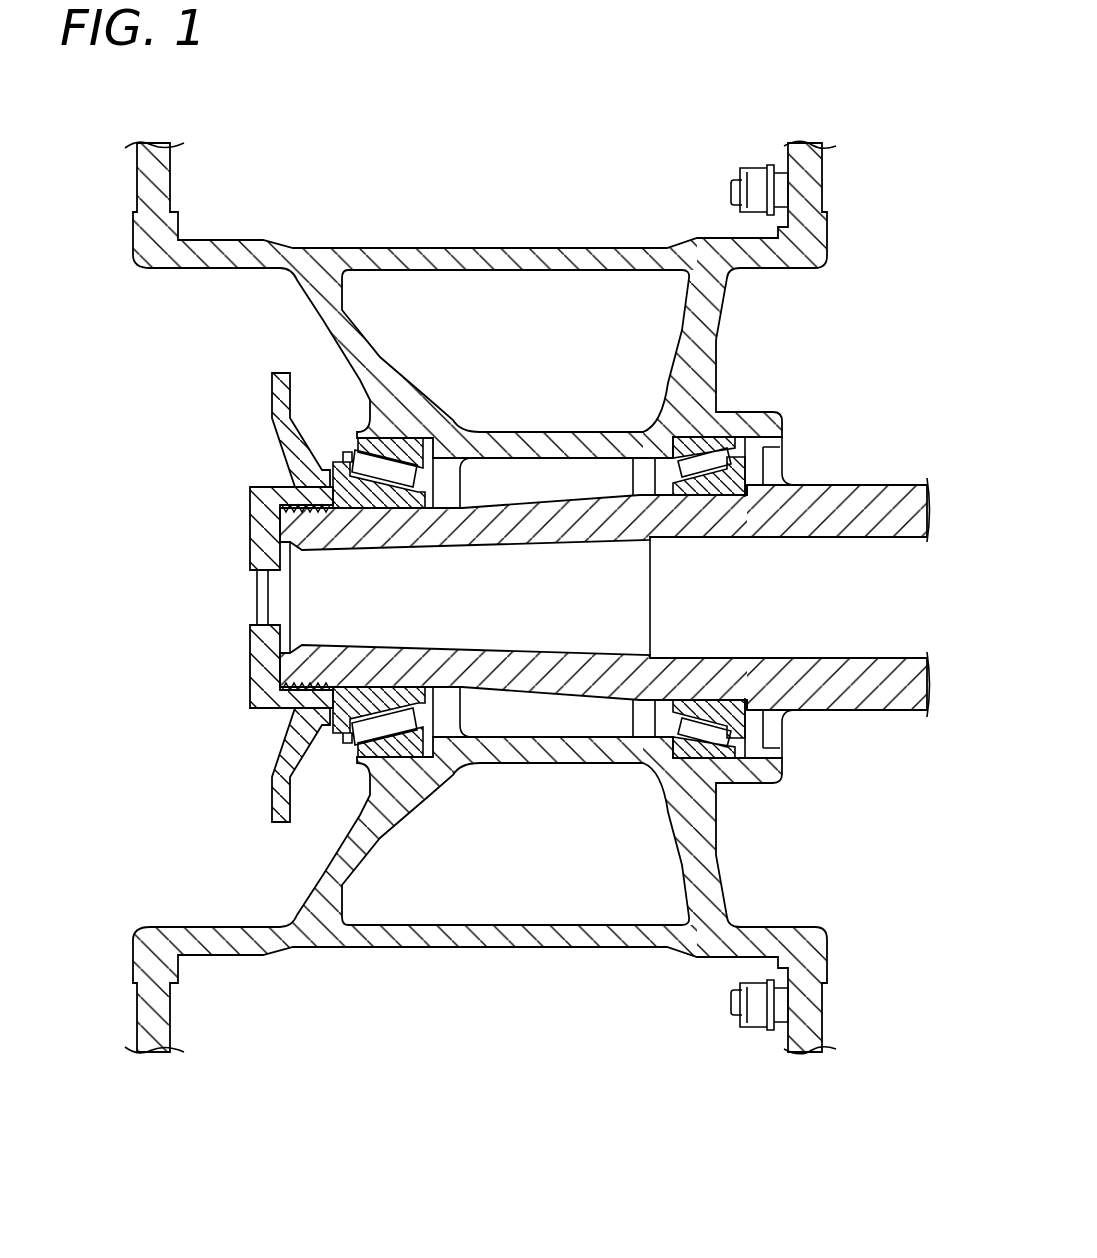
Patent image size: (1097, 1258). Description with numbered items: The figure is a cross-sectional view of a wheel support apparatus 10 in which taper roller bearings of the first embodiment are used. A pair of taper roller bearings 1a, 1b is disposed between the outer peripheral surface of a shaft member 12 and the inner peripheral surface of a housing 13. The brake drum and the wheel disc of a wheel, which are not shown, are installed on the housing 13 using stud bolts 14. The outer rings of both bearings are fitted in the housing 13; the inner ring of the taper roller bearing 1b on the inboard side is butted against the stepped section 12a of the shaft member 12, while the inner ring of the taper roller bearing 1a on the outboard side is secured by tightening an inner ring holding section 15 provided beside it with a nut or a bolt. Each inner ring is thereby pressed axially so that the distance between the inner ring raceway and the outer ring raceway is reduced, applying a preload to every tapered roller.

The wheel support apparatus 10 is at (527, 558).
The taper roller bearing 1a is at (325, 552).
The taper roller bearing 1b is at (733, 553).
The shaft member 12 is at (550, 672).
The stepped section 12a is at (760, 675).
The housing 13 is at (480, 597).
The stud bolts 14 is at (759, 569).
The inner ring holding section 15 is at (271, 635).